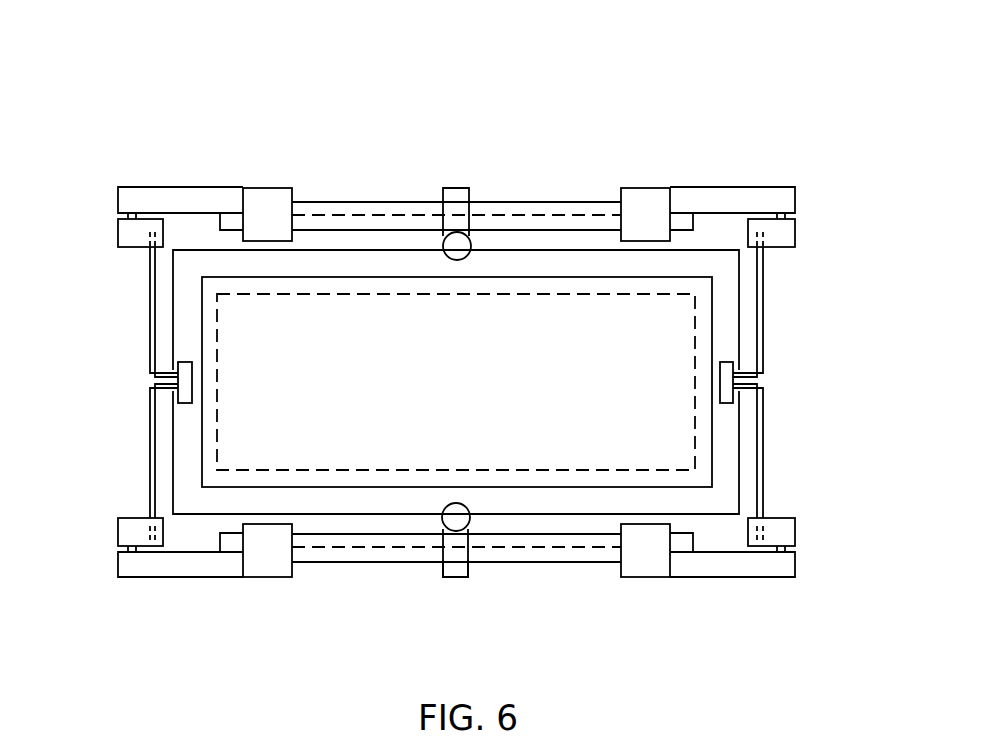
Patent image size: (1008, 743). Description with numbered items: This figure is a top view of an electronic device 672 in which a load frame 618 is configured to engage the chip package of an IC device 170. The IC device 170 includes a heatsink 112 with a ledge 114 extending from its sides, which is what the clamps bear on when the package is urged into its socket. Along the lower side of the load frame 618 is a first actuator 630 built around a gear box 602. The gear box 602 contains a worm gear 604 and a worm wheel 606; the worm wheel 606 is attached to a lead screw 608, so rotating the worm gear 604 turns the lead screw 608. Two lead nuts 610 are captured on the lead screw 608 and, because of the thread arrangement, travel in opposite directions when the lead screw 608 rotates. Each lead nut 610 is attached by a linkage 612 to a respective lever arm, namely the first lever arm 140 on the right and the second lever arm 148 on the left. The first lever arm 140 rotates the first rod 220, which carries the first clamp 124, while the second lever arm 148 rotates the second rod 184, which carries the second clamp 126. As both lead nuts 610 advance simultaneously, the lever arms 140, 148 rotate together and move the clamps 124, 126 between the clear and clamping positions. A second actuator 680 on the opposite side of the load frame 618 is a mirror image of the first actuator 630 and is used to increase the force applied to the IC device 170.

The electronic device 672 is at (567, 128).
The heatsink 112 is at (322, 262).
The ledge 114 is at (182, 300).
The IC device 170 is at (365, 250).
The second actuator 680 is at (475, 187).
The lead nuts 610 is at (267, 577).
The linkage 612 is at (193, 583).
The second lever arm 148 is at (140, 518).
The first lever arm 140 is at (778, 518).
The second rod 184 is at (153, 425).
The load frame 618 is at (773, 300).
The first rod 220 is at (762, 437).
The second clamp 126 is at (193, 383).
The first clamp 124 is at (718, 378).
The first actuator 630 is at (392, 565).
The lead screw 608 is at (545, 548).
The worm gear 604 is at (458, 513).
The gear box 602 is at (475, 573).
The worm wheel 606 is at (452, 565).